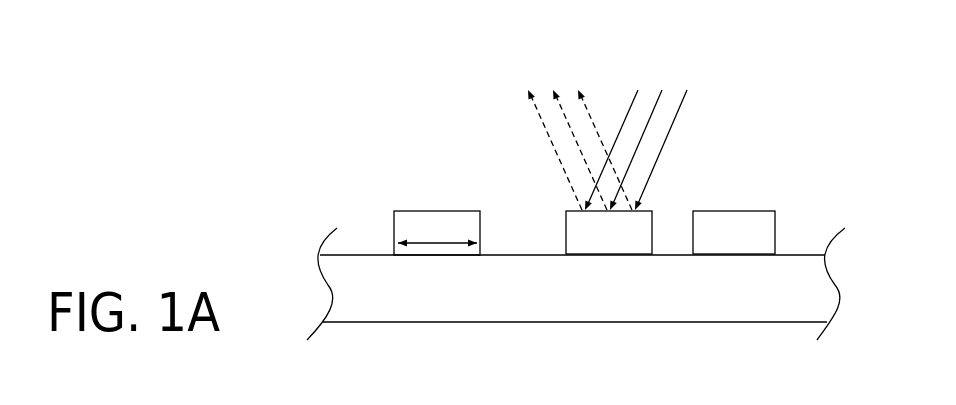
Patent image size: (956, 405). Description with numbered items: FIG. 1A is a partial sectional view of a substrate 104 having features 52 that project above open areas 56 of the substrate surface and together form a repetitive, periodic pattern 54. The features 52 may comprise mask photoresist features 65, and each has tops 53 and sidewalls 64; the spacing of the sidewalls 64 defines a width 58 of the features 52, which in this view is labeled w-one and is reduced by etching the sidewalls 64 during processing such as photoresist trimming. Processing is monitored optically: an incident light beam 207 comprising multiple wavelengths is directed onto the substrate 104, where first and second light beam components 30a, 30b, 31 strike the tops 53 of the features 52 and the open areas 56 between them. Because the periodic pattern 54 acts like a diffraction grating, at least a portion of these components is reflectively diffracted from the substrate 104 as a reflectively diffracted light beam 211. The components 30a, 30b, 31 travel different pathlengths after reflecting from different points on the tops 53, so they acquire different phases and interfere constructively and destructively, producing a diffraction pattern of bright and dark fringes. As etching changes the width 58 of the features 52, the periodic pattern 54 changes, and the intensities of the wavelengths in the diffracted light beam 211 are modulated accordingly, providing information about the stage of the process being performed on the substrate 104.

The substrate 104 is at (401, 116).
The reflectively diffracted light beam 211 is at (509, 74).
The first light beam component 30b is at (570, 107).
The first light beam component 30a is at (590, 115).
The second light beam component 31 is at (542, 122).
The incident light beam 207 is at (721, 74).
The periodic pattern 54 is at (736, 109).
The features 52 is at (735, 210).
The tops of features 53 is at (760, 211).
The mask photoresist features 65 is at (775, 232).
The open areas 56 is at (670, 254).
The sidewalls 64 is at (482, 232).
The width 58 is at (437, 255).